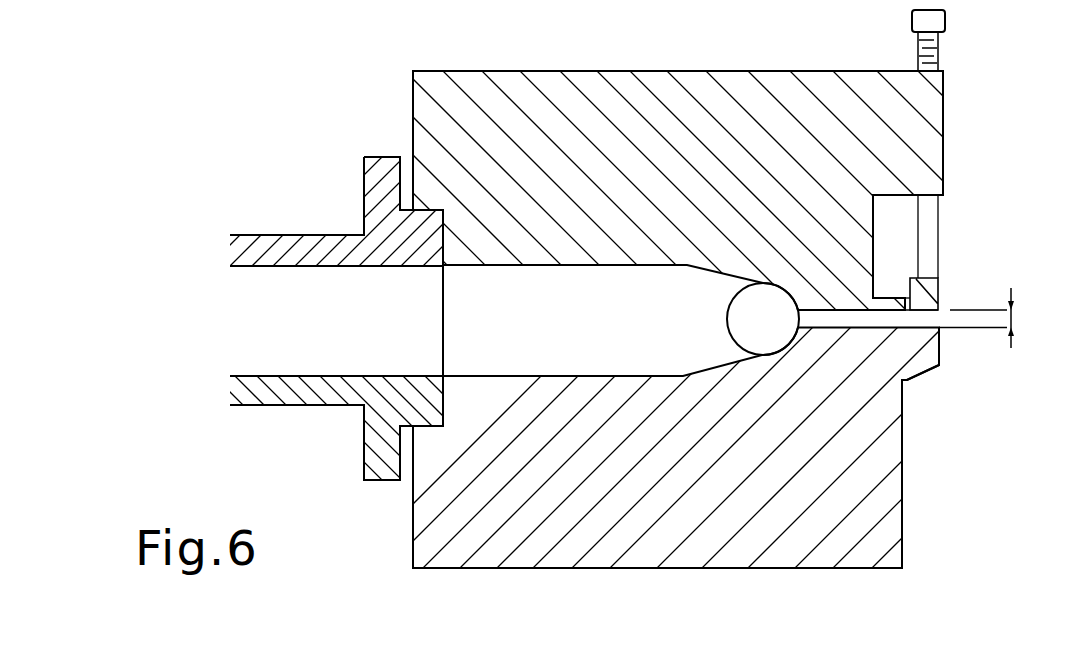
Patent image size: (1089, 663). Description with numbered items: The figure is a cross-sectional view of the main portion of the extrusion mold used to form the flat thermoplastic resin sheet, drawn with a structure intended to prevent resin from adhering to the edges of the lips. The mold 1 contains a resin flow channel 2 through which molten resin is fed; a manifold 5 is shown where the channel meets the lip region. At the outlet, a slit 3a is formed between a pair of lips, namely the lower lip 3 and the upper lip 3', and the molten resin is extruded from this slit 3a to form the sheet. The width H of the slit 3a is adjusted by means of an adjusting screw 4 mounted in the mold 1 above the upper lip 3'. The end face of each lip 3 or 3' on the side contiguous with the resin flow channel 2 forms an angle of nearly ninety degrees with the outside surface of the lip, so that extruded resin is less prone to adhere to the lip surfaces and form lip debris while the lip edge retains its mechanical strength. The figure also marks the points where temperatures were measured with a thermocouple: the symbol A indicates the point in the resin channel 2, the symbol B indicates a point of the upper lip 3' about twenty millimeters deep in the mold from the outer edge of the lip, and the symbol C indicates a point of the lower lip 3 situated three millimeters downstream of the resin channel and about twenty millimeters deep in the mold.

The mold 1 is at (778, 82).
The resin flow channel 2 is at (678, 318).
The lower lip 3 is at (947, 364).
The upper lip 3' is at (951, 283).
The slit 3a is at (925, 321).
The adjusting screw 4 is at (918, 45).
The manifold 5 is at (733, 335).
The temperature measuring point in resin channel A is at (376, 301).
The temperature measuring point of upper lip B is at (904, 299).
The temperature measuring point of lower lip C is at (896, 338).
The width of the slit H is at (1016, 320).